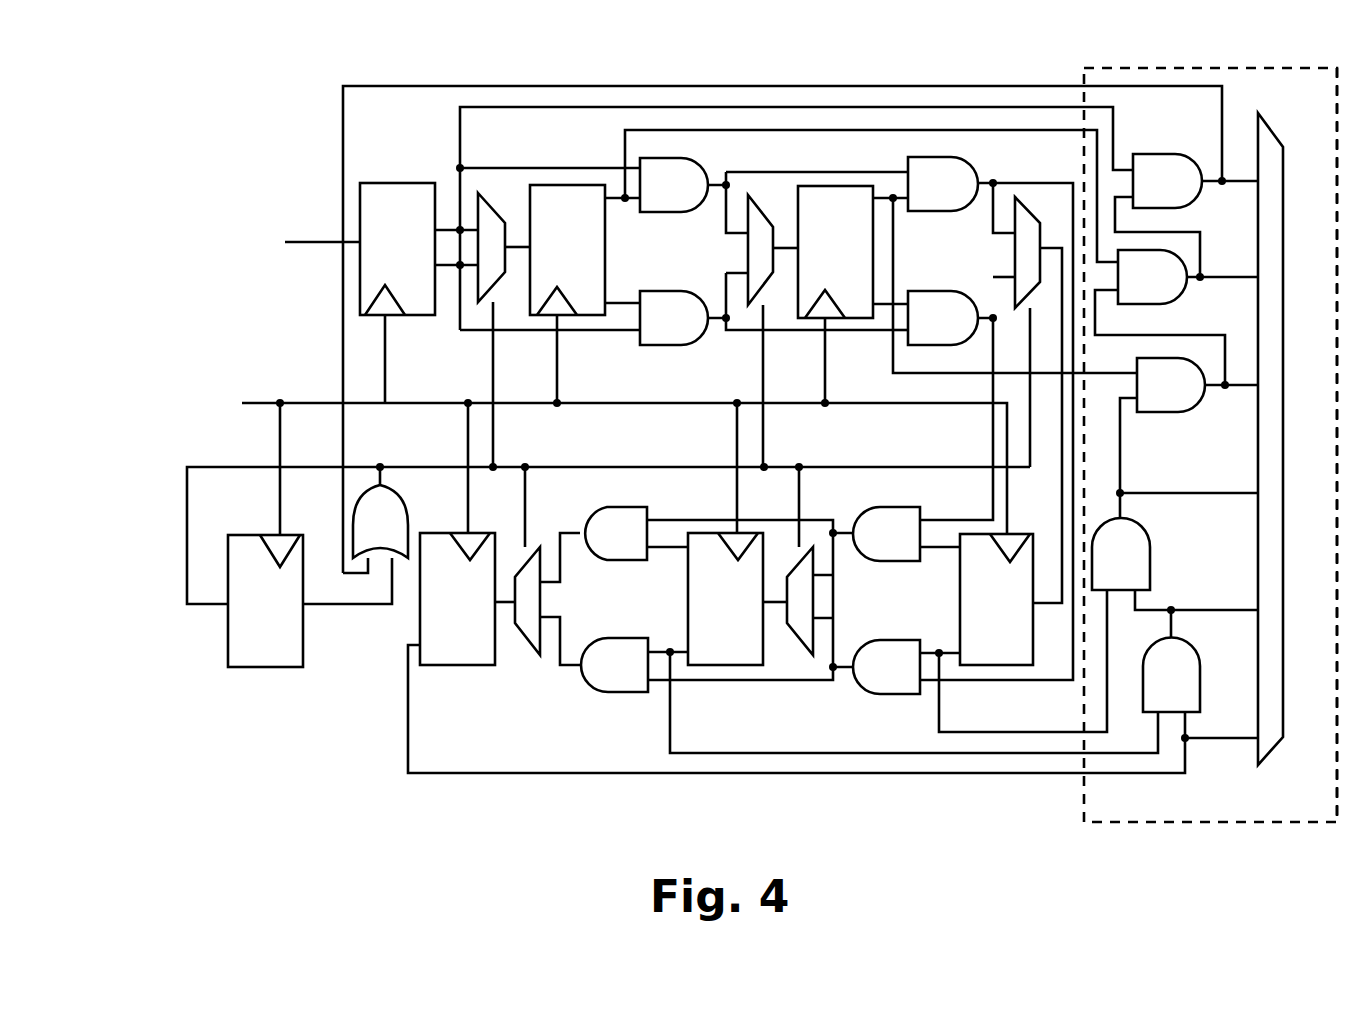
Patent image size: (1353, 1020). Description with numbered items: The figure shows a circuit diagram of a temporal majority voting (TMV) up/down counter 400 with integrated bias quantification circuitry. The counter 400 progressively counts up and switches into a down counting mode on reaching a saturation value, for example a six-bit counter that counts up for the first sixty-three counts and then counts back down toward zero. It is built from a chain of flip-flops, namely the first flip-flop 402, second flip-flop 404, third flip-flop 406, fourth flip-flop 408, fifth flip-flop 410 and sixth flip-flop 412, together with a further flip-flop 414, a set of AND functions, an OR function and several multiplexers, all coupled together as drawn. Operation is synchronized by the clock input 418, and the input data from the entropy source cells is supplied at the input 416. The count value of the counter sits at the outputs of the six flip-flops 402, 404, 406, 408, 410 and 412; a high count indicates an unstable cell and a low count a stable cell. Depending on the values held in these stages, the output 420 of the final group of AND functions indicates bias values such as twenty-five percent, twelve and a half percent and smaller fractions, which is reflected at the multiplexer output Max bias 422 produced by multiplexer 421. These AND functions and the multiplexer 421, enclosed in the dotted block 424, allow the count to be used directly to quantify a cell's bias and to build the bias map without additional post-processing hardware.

The TMV up/down counter 400 is at (182, 94).
The flip-flop T0 402 is at (370, 198).
The flip-flop T1 404 is at (573, 193).
The flip-flop T2 406 is at (848, 190).
The flip-flop T3 408 is at (1000, 643).
The flip-flop T4 410 is at (710, 635).
The flip-flop T5 412 is at (452, 633).
The flip-flop FF 414 is at (270, 645).
The input 416 is at (185, 233).
The clock input 418 is at (182, 373).
The output 420 is at (1217, 753).
The multiplexer 421 is at (1277, 732).
The Max bias output 422 is at (1308, 603).
The dotted block 424 is at (1098, 823).